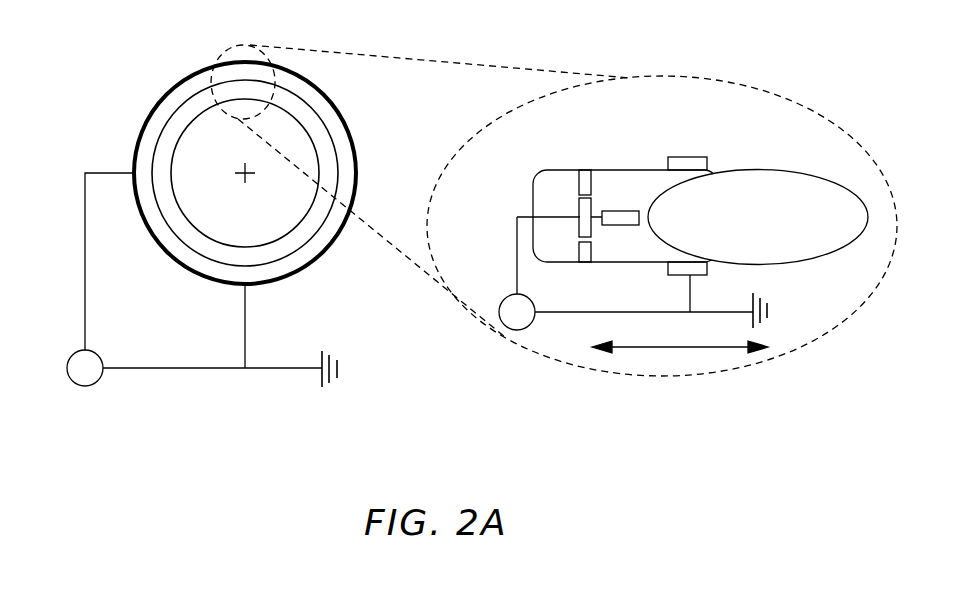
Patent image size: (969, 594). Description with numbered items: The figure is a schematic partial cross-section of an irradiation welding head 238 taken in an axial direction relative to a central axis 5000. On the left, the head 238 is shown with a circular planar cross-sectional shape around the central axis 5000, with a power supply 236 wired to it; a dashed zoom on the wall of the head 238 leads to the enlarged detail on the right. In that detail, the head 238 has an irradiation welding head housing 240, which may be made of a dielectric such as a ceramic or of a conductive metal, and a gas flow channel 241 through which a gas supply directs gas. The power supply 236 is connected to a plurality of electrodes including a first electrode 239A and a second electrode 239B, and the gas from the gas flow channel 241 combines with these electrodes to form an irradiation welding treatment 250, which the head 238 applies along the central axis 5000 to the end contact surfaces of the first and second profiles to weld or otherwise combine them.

The power supply 236 is at (88, 385).
The irradiation welding head 238 is at (349, 128).
The first electrode 239A is at (681, 157).
The second electrode 239B is at (615, 211).
The irradiation welding head housing 240 is at (596, 170).
The gas flow channel 241 is at (553, 187).
The irradiation welding treatment 250 is at (757, 170).
The central axis 5000 is at (246, 178).